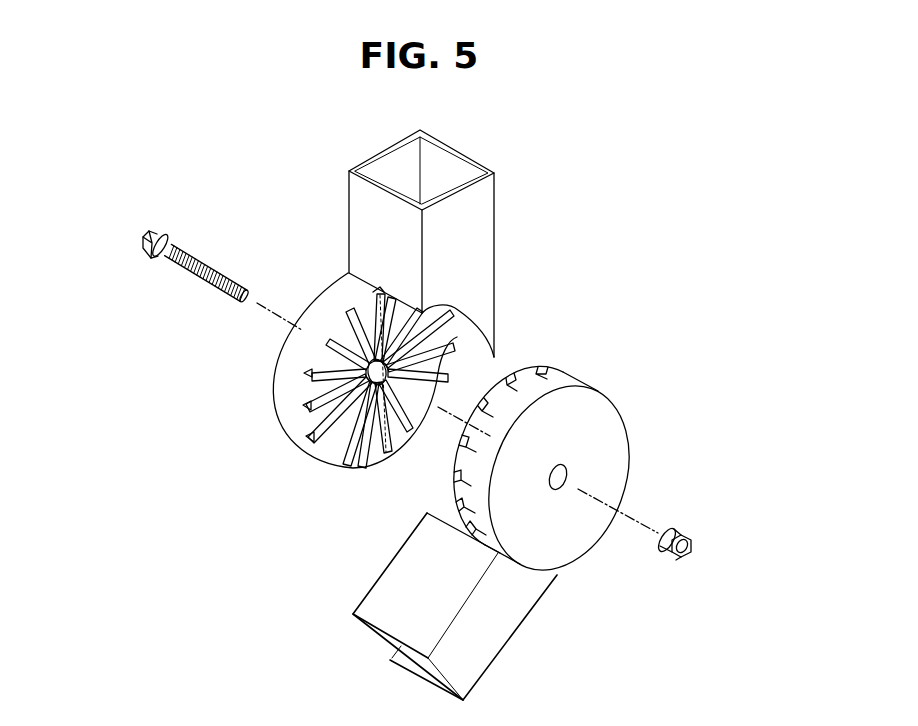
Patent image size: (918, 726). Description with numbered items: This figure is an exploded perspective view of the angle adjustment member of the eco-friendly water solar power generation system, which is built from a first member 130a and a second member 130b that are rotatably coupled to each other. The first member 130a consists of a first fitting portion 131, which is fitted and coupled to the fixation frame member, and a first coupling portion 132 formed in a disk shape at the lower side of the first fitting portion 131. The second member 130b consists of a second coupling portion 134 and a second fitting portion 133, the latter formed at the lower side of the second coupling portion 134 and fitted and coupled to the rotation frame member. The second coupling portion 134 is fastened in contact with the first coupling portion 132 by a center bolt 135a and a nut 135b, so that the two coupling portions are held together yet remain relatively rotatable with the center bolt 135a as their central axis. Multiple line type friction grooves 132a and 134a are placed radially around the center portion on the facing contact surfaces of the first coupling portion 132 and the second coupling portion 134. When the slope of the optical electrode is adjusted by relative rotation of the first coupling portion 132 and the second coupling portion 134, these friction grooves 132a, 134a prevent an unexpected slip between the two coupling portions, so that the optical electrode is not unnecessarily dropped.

The first fitting portion 131 is at (487, 200).
The first member 130a is at (512, 247).
The first coupling portion 132 is at (331, 382).
The friction grooves 132a is at (307, 444).
The second coupling portion 134 is at (581, 462).
The friction grooves 134a is at (565, 369).
The second member 130b is at (643, 476).
The second fitting portion 133 is at (507, 633).
The center bolt 135a is at (200, 255).
The nut 135b is at (688, 533).